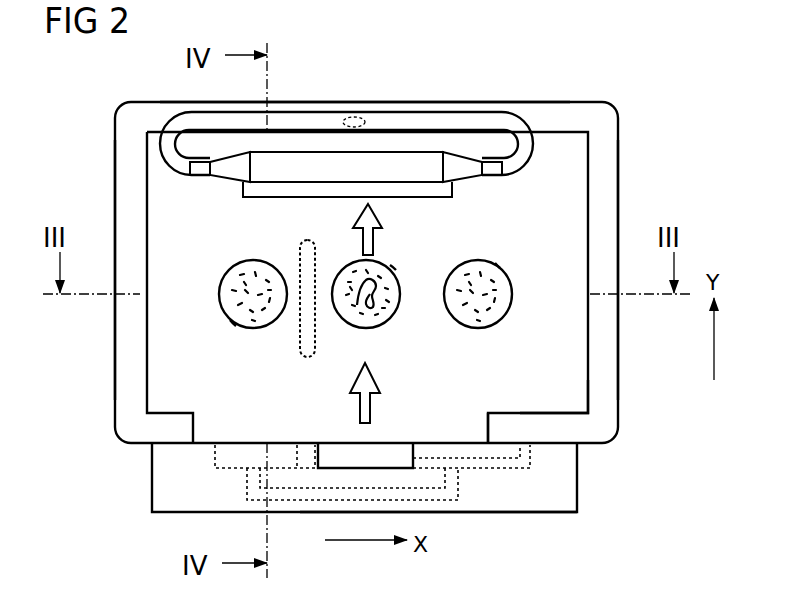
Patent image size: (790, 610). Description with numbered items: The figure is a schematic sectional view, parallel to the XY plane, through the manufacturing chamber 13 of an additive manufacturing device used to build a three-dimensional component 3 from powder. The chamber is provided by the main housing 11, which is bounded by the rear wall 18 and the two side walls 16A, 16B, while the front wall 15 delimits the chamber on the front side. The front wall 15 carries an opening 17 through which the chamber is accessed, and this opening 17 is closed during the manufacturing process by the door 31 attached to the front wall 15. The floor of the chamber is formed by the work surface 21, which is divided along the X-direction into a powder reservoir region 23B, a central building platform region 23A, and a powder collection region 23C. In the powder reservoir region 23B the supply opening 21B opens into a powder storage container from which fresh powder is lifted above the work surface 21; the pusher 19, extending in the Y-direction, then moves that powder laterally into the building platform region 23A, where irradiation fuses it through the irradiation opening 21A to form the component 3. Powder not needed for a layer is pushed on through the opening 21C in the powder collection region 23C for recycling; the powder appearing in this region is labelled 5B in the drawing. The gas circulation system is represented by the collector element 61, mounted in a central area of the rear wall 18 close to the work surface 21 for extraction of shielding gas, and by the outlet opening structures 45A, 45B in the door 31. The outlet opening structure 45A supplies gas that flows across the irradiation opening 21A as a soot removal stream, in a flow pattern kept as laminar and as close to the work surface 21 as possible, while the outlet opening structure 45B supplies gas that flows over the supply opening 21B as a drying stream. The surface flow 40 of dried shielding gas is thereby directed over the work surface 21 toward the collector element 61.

The main housing 11 is at (619, 193).
The rear wall 18 is at (567, 102).
The side wall 16A is at (115, 410).
The side wall 16B is at (607, 370).
The work surface 21 is at (568, 199).
The manufacturing chamber 13 is at (564, 393).
The opening 17 is at (481, 433).
The collector element 61 is at (462, 110).
The irradiation opening 21A is at (339, 318).
The supply opening 21B is at (237, 323).
The opening 21C is at (492, 321).
The 3D component 3 is at (378, 313).
The granular material 5B is at (497, 308).
The building platform region 23A is at (400, 260).
The powder reservoir region 23B is at (236, 335).
The powder collection region 23C is at (498, 256).
The pusher 19 is at (300, 335).
The surface flow 40 is at (357, 228).
The front wall 15 is at (588, 447).
The door 31 is at (590, 512).
The outlet opening structure 45A is at (390, 453).
The outlet opening structure 45B is at (232, 466).